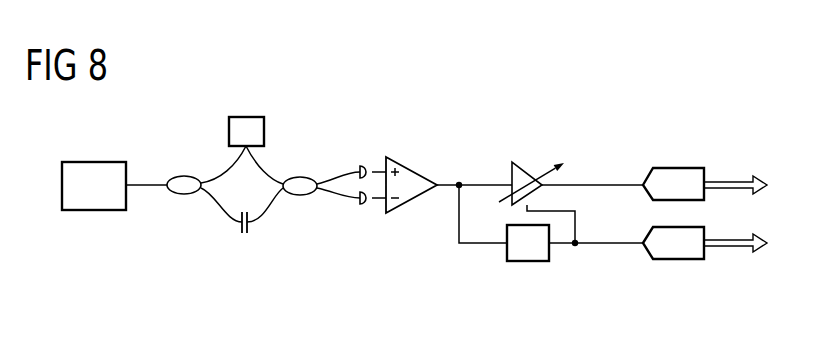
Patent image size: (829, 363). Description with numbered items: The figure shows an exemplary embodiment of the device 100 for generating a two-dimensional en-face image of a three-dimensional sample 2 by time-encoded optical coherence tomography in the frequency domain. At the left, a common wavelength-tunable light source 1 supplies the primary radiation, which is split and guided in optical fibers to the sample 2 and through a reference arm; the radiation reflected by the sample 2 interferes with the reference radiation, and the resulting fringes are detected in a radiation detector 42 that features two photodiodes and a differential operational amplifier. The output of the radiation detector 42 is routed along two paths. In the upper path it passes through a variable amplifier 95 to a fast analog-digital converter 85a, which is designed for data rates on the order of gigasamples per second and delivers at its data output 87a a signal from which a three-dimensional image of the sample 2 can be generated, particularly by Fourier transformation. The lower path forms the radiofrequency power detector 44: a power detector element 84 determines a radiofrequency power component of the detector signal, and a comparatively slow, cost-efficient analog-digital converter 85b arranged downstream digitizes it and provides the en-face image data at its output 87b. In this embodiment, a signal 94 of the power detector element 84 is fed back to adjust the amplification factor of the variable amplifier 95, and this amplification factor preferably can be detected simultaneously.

The wavelength-tunable light source 1 is at (62, 185).
The sample 2 is at (264, 130).
The radiation detector 42 is at (437, 150).
The radiofrequency power detector 44 is at (450, 213).
The power detector element 84 is at (527, 261).
The fast analog-digital converter 85a is at (680, 168).
The slow analog-digital converter 85b is at (678, 259).
The data output 87a is at (735, 182).
The data output 87b is at (735, 246).
The signal of the power detector element 94 is at (575, 223).
The variable amplifier 95 is at (528, 162).
The device 100 is at (650, 83).